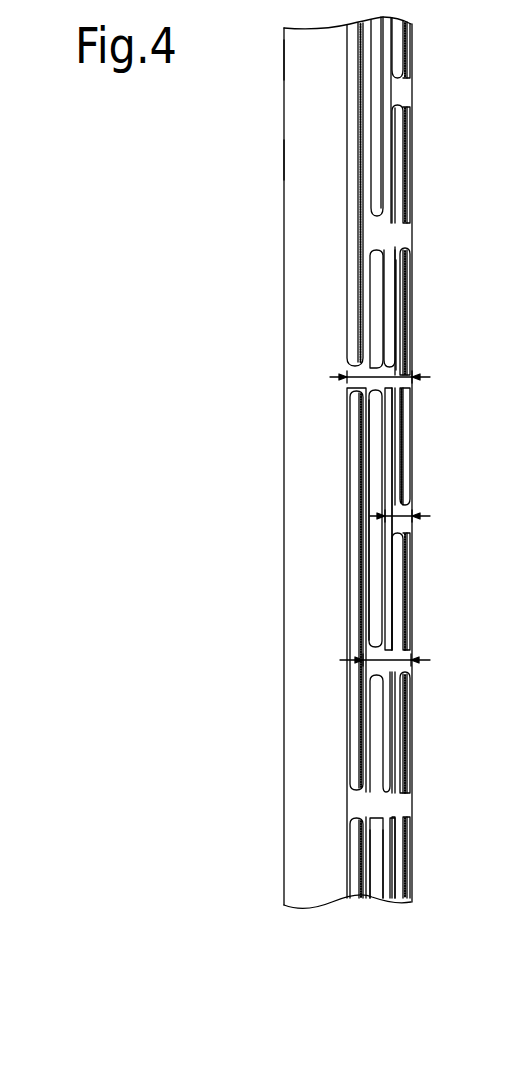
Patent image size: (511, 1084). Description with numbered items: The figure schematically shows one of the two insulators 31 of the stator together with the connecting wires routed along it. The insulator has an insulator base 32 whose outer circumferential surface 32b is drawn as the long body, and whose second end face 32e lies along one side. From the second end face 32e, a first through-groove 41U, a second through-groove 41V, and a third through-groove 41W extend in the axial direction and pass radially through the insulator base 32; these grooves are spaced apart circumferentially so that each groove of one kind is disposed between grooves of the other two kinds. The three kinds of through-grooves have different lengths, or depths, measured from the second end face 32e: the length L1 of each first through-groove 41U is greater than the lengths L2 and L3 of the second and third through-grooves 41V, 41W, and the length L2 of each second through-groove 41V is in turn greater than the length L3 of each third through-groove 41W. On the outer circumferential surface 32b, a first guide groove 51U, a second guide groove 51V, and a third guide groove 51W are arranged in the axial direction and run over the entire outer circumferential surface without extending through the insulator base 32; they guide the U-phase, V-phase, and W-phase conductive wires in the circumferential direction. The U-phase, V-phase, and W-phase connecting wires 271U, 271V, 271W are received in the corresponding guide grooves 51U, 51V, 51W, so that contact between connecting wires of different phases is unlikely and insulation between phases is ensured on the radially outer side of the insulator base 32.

The insulator 31 is at (284, 60).
The insulator base 32 is at (284, 120).
The outer circumferential surface 32b is at (284, 160).
The second end face 32e is at (412, 178).
The U-phase connecting wire 271U is at (350, 290).
The V-phase connecting wire 271V is at (377, 42).
The W-phase connecting wire 271W is at (397, 295).
The first through-groove 41U is at (392, 362).
The second through-groove 41V is at (408, 678).
The third through-groove 41W is at (406, 101).
The first guide groove 51U is at (350, 430).
The second guide groove 51V is at (372, 612).
The third guide groove 51W is at (404, 452).
The length of first through-groove L1 is at (378, 377).
The length of second through-groove L2 is at (397, 660).
The length of third through-groove L3 is at (405, 512).